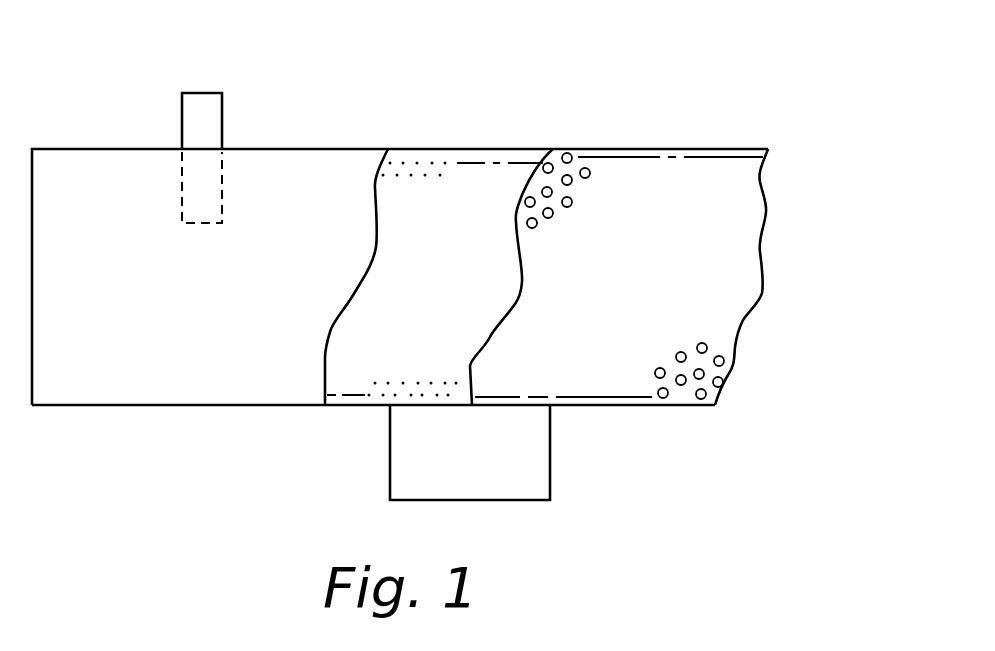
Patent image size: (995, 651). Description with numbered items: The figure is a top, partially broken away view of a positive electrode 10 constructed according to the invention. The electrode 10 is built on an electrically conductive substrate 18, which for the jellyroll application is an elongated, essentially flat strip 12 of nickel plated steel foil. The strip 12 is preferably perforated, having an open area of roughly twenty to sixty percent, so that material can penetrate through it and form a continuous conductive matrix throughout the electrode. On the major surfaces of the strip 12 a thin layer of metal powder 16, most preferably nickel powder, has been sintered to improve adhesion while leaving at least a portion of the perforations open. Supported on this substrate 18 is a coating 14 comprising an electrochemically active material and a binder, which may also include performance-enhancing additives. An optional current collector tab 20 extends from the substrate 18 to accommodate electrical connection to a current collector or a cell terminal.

The positive electrode 10 is at (747, 370).
The strip 12 is at (664, 377).
The coating 14 is at (220, 373).
The metal powder 16 is at (427, 392).
The electrically conductive substrate 18 is at (472, 502).
The current collector tab 20 is at (195, 122).